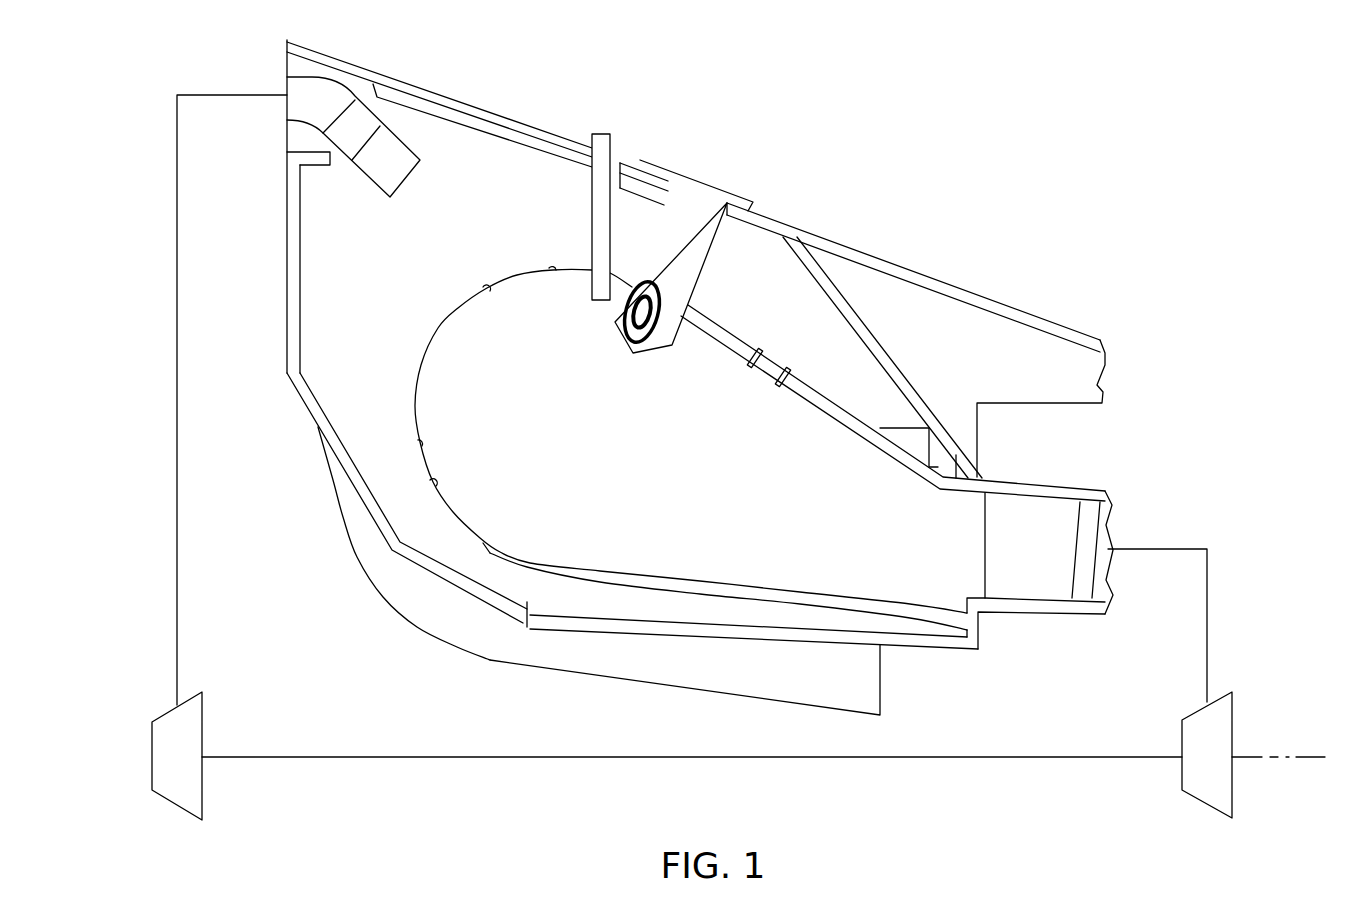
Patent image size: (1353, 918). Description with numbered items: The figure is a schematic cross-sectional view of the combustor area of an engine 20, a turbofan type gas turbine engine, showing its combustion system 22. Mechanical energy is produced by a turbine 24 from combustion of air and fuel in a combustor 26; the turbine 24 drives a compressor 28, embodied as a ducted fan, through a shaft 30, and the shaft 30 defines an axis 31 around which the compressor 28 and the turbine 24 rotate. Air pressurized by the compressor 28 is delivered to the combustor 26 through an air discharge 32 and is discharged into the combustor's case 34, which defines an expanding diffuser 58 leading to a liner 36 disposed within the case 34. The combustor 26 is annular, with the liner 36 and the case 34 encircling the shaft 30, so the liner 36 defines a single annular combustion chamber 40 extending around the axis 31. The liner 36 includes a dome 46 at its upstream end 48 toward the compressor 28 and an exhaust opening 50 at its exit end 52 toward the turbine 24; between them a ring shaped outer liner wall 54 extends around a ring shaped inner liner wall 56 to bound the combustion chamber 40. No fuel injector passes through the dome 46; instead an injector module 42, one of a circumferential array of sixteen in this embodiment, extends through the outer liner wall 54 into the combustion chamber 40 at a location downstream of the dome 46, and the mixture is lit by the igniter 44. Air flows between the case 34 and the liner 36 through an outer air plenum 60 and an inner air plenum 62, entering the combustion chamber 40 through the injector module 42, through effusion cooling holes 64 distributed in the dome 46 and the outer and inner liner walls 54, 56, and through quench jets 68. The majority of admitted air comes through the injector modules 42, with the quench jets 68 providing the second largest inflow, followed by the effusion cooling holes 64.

The engine 20 is at (1062, 320).
The combustion system 22 is at (532, 193).
The turbine 24 is at (1233, 730).
The combustor 26 is at (832, 395).
The compressor 28 is at (203, 720).
The shaft 30 is at (340, 756).
The axis 31 is at (1262, 758).
The air discharge 32 is at (380, 155).
The case 34 is at (352, 493).
The liner 36 is at (738, 332).
The combustion chamber 40 is at (728, 496).
The injector module 42 is at (705, 236).
The igniter 44 is at (611, 143).
The dome 46 is at (420, 390).
The upstream end 48 is at (437, 330).
The exhaust opening 50 is at (962, 495).
The exit end 52 is at (988, 480).
The outer liner wall 54 is at (853, 417).
The inner liner wall 56 is at (677, 585).
The diffuser 58 is at (352, 408).
The outer air plenum 60 is at (760, 257).
The inner air plenum 62 is at (527, 605).
The effusion cooling holes 64 is at (487, 290).
The quench jets 68 is at (752, 365).